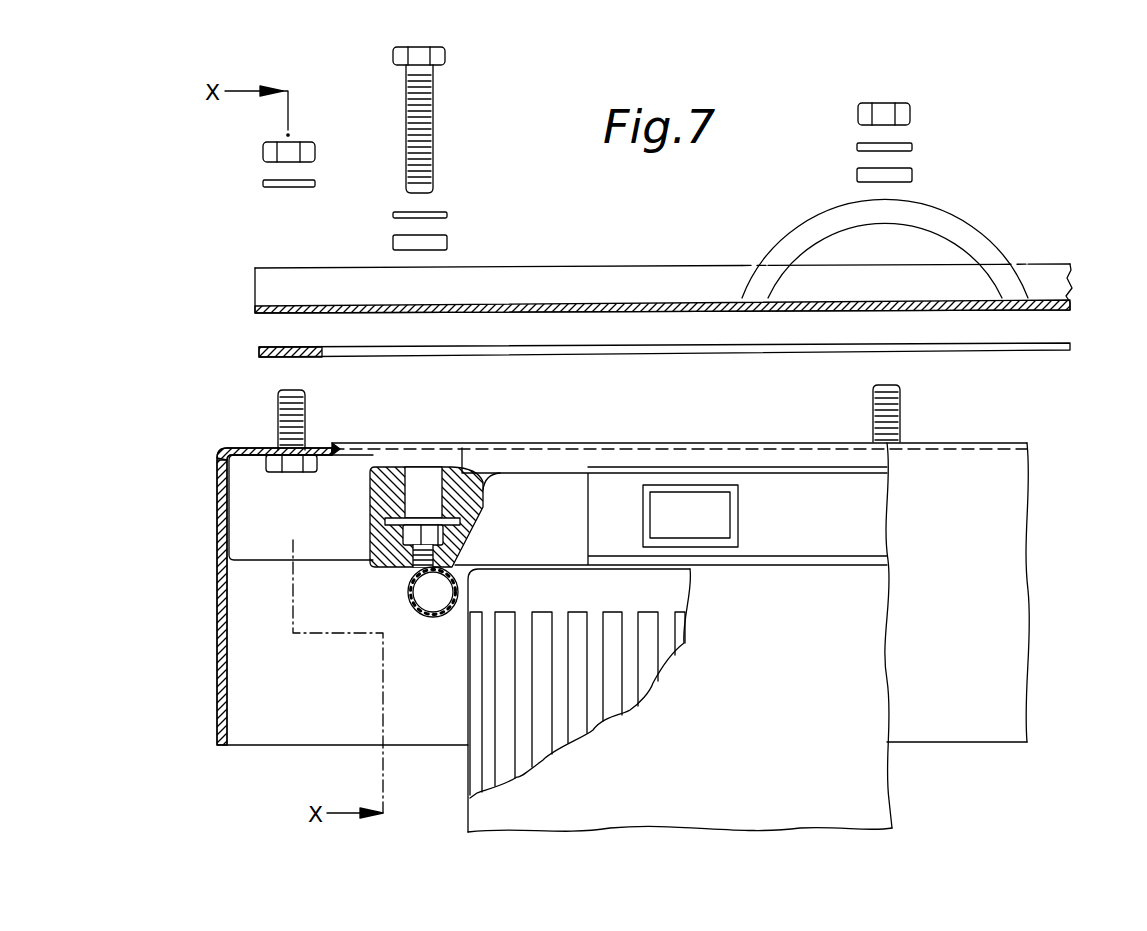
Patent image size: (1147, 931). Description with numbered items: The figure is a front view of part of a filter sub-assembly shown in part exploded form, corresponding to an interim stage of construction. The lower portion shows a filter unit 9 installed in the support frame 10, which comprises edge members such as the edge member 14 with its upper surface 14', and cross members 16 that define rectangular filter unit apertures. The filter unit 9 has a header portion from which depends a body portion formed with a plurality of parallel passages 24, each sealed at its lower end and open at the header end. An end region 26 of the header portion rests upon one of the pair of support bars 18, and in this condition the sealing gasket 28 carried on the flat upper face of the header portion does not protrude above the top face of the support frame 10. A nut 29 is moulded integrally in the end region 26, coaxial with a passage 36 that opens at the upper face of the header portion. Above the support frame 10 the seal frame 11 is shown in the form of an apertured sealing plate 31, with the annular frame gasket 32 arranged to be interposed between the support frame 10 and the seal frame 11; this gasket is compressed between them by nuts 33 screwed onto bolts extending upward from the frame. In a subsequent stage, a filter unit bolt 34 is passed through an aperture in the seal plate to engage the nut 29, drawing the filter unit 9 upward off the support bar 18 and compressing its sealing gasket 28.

The filter unit 9 is at (721, 637).
The support frame 10 is at (205, 484).
The seal frame 11 is at (616, 256).
The edge member 14 is at (307, 601).
The upper surface of edge member 14' is at (271, 428).
The cross member 16 is at (253, 522).
The support bar 18 is at (409, 597).
The parallel passages 24 is at (558, 723).
The end region of header portion 26 is at (401, 482).
The sealing gasket 28 is at (812, 468).
The nut 29 is at (408, 537).
The sealing plate 31 is at (617, 298).
The frame gasket 32 is at (1040, 342).
The nut 33 is at (263, 152).
The filter unit bolt 34 is at (406, 108).
The passage 36 is at (428, 480).